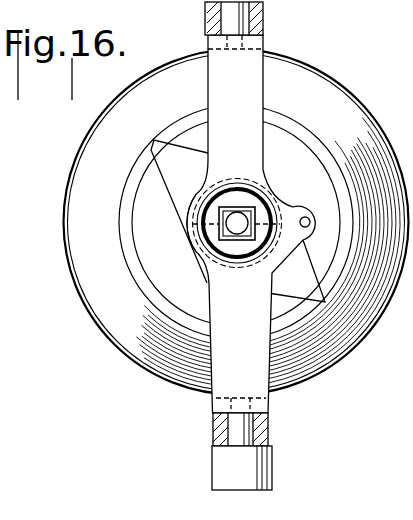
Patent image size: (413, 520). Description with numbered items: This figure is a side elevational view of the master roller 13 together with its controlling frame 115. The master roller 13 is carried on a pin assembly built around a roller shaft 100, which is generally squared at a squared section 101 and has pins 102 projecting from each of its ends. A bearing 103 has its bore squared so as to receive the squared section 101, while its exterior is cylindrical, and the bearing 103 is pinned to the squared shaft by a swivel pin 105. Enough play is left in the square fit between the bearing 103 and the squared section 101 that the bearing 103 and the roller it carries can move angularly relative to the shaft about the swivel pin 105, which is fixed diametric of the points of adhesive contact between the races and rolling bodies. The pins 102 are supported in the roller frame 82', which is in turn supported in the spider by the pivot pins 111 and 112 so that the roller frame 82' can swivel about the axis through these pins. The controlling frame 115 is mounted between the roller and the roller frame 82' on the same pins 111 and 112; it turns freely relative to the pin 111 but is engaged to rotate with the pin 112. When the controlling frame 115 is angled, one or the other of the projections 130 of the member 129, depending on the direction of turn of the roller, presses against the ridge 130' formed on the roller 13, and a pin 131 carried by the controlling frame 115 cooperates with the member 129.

The master roller 13 is at (112, 325).
The roller frame 82' is at (209, 240).
The pivot pin 112 is at (259, 20).
The pivot pin 111 is at (270, 424).
The controlling frame 115 is at (215, 378).
The roller shaft 100 is at (207, 272).
The squared section 101 is at (270, 185).
The pins 102 is at (270, 185).
The bearing 103 is at (237, 198).
The swivel pin 105 is at (193, 226).
The member 129 is at (183, 157).
The projections 130 is at (255, 241).
The ridge 130' is at (214, 222).
The pin 131 is at (306, 217).